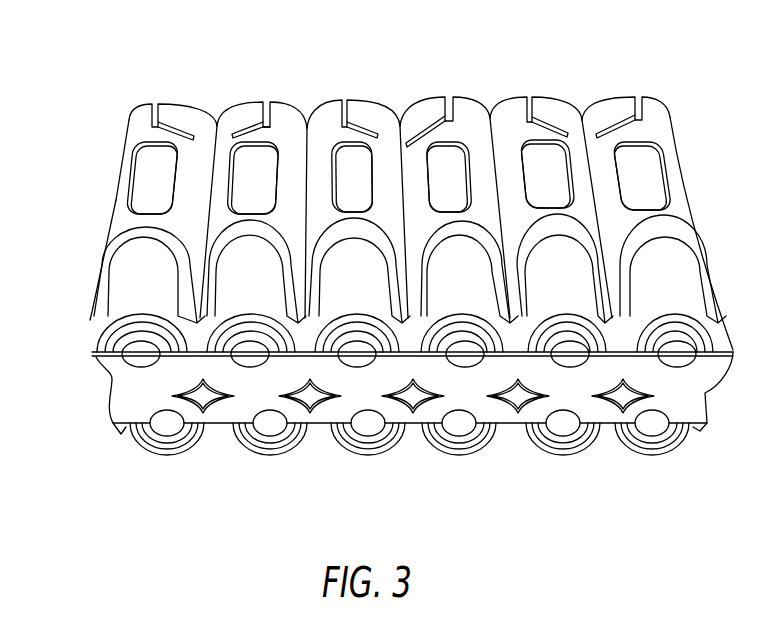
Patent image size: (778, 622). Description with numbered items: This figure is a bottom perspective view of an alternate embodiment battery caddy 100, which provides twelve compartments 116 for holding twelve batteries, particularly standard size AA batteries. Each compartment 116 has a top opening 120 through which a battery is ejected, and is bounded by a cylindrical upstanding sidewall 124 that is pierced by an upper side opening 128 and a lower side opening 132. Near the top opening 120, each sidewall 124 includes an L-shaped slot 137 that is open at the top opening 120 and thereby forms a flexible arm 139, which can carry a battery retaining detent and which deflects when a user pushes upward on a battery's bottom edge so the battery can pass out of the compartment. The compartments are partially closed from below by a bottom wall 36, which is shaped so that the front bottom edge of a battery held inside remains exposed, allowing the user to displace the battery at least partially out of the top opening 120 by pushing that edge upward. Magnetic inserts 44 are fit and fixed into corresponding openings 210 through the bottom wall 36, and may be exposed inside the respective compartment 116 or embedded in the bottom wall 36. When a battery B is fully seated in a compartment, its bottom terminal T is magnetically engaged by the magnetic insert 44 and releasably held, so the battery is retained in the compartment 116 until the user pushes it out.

The battery caddy 100 is at (370, 97).
The compartment 116 is at (130, 127).
The top opening 120 is at (186, 105).
The cylindrical upstanding sidewall 124 is at (118, 214).
The upper side opening 128 is at (133, 190).
The lower side opening 132 is at (95, 296).
The L-shaped slot 137 is at (268, 113).
The flexible arm 139 is at (238, 120).
The battery B is at (647, 170).
The bottom terminal T is at (96, 352).
The bottom wall 36 is at (110, 398).
The magnetic insert 44 is at (167, 425).
The opening 210 is at (458, 428).